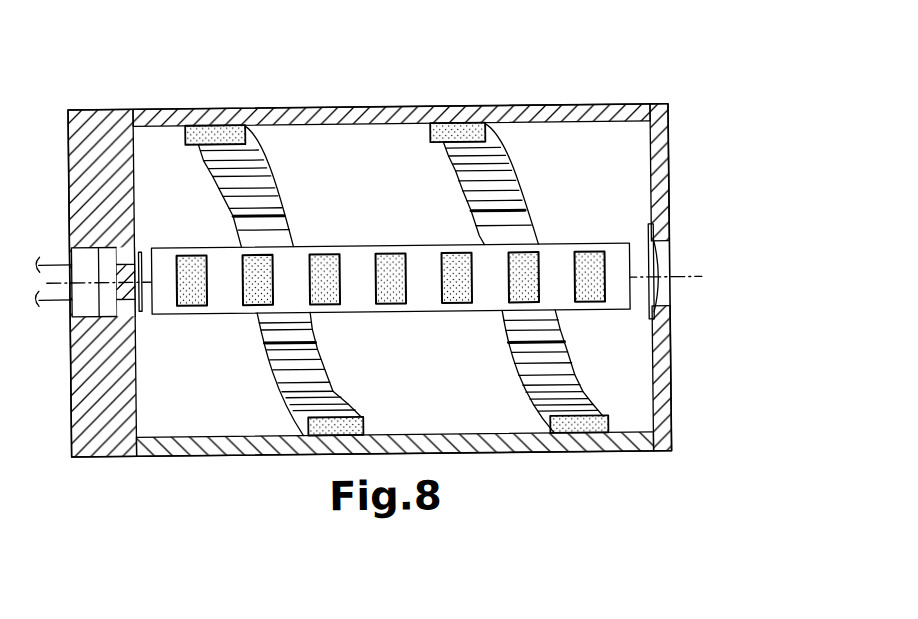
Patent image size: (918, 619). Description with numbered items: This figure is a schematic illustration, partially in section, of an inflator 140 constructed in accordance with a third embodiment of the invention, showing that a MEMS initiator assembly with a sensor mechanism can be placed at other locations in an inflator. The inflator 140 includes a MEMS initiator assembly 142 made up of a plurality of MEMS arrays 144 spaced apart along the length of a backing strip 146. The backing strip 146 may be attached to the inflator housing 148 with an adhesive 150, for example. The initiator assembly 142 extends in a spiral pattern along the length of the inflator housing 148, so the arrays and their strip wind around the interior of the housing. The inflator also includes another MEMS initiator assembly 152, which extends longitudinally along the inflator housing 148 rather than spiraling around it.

The inflator 140 is at (558, 481).
The MEMS initiator assembly 142 is at (320, 192).
The MEMS arrays 144 is at (548, 342).
The backing strip 146 is at (529, 250).
The inflator housing 148 is at (527, 108).
The adhesive 150 is at (590, 442).
The MEMS initiator assembly 152 is at (222, 316).